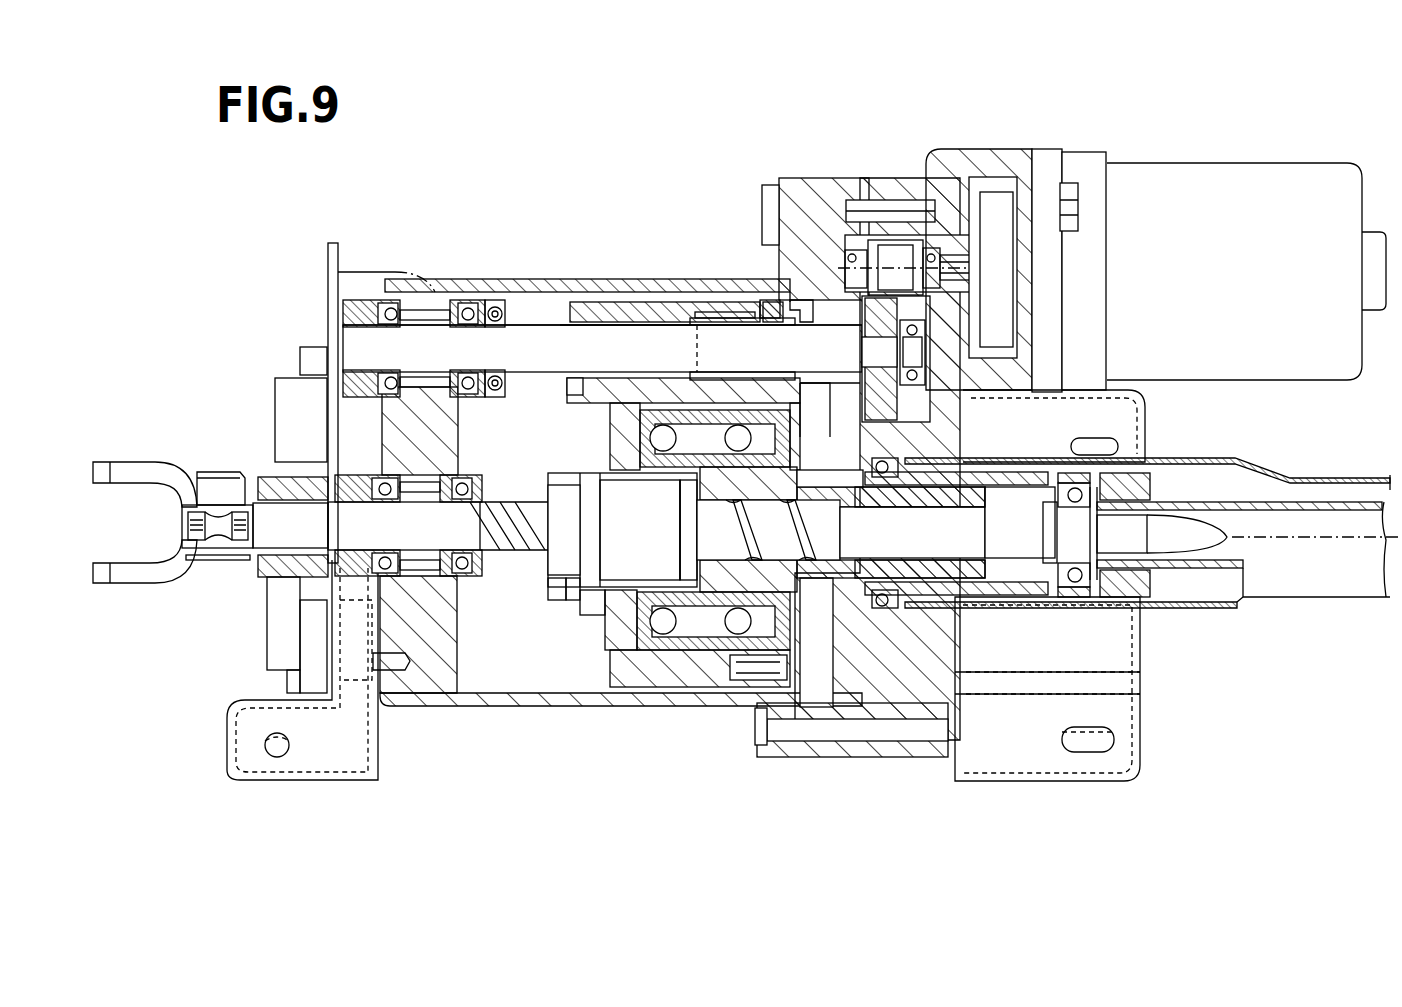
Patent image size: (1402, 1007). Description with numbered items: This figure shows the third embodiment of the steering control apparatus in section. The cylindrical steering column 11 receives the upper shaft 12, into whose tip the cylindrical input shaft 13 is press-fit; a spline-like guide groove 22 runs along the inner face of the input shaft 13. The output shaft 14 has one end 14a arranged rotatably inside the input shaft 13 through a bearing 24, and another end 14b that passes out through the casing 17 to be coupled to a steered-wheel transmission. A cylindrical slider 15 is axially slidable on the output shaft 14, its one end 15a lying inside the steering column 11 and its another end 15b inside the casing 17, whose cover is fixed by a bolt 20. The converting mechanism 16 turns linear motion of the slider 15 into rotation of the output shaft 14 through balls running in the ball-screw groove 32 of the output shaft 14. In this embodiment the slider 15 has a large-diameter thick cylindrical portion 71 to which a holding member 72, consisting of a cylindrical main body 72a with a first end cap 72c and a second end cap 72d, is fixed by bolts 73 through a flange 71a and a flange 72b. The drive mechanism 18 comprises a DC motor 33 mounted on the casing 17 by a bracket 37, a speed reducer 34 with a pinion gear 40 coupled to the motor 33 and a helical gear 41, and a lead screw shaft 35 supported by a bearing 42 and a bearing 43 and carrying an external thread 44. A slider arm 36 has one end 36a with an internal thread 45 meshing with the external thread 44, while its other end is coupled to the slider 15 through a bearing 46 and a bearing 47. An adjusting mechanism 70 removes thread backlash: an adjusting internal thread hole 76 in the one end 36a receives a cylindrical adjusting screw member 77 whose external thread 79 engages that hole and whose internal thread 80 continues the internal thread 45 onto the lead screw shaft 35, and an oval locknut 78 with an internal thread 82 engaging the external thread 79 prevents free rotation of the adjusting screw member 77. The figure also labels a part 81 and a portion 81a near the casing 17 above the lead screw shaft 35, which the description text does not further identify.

The steering column 11 is at (1233, 458).
The upper shaft 12 is at (1291, 502).
The input shaft 13 is at (1020, 474).
The output shaft 14 is at (500, 510).
The one end of output shaft 14a is at (1080, 534).
The another end of output shaft 14b is at (218, 530).
The slider 15 is at (828, 584).
The one end of slider 15a is at (965, 568).
The another end of slider 15b is at (810, 705).
The converting mechanism 16 is at (560, 578).
The casing 17 is at (808, 176).
The drive mechanism 18 is at (1142, 162).
The bolt 20 is at (763, 745).
The guide groove 22 is at (1000, 486).
The bearing 24 is at (1075, 582).
The ball-screw groove 32 is at (813, 497).
The DC motor 33 is at (1246, 164).
The speed reducer 34 is at (902, 240).
The lead screw shaft 35 is at (530, 342).
The slider arm 36 is at (627, 403).
The one end of slider arm 36a is at (637, 308).
The bracket 37 is at (1002, 156).
The pinion gear 40 is at (880, 254).
The helical gear 41 is at (873, 388).
The bearing 42 is at (462, 308).
The bearing 43 is at (931, 330).
The external thread 44 is at (553, 320).
The internal thread 45 is at (593, 328).
The bearing 46 is at (640, 432).
The bearing 47 is at (738, 672).
The adjusting mechanism 70 is at (804, 408).
The large-diameter thick cylindrical portion 71 is at (707, 657).
The flange 71a is at (600, 612).
The holding member 72 is at (616, 640).
The cylindrical main body 72a is at (625, 520).
The flange 72b is at (575, 617).
The first end cap 72c is at (668, 643).
The second end cap 72d is at (562, 588).
The bolt 73 is at (570, 600).
The adjusting internal thread hole 76 is at (713, 316).
The adjusting screw member 77 is at (740, 304).
The locknut 78 is at (770, 302).
The external thread 79 is at (677, 463).
The internal thread 80 is at (682, 320).
The block 81 is at (775, 298).
The slot bar 81a is at (820, 298).
The internal thread 82 is at (770, 382).